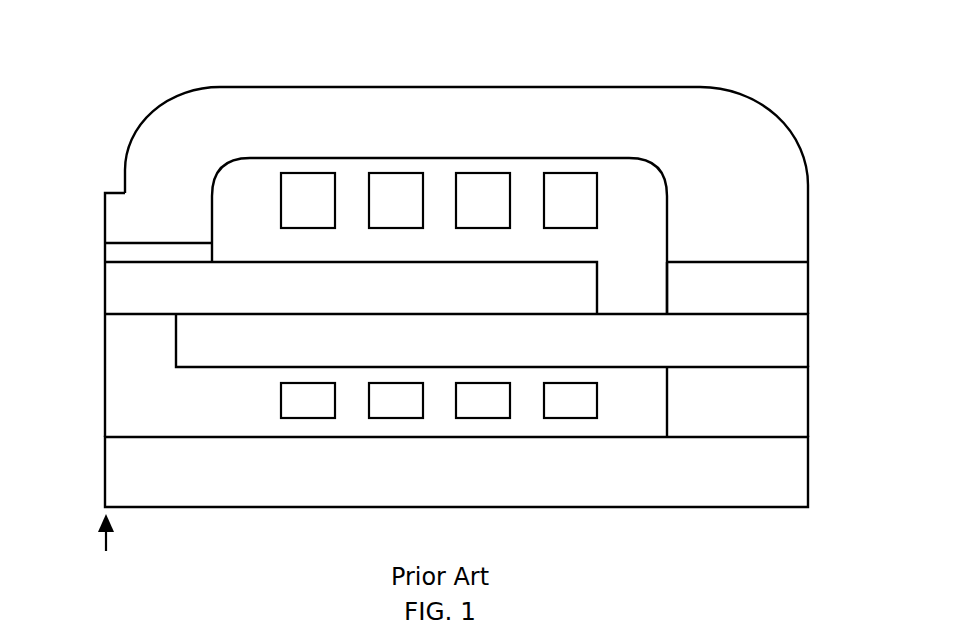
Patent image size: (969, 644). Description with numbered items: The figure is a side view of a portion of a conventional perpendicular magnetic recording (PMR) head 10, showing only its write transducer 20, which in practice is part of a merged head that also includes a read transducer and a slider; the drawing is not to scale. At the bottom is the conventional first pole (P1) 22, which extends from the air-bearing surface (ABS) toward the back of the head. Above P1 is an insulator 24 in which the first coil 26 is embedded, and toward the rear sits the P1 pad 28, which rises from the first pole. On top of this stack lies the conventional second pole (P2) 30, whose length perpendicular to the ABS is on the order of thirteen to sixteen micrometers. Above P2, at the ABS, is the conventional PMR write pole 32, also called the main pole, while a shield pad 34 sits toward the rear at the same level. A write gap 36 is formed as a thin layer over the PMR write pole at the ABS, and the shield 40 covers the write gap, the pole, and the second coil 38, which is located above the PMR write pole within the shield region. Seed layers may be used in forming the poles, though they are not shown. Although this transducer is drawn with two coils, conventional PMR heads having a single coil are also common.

The perpendicular magnetic recording (PMR) head 10 is at (53, 30).
The write transducer 20 is at (359, 70).
The conventional first pole (P1) 22 is at (105, 482).
The insulator 24 is at (105, 416).
The first coil 26 is at (262, 401).
The P1 pad 28 is at (808, 418).
The conventional second pole (P2) 30 is at (808, 358).
The conventional PMR write pole 32 is at (105, 298).
The shield pad 34 is at (808, 278).
The write gap 36 is at (105, 253).
The second coil 38 is at (615, 198).
The shield 40 is at (125, 166).